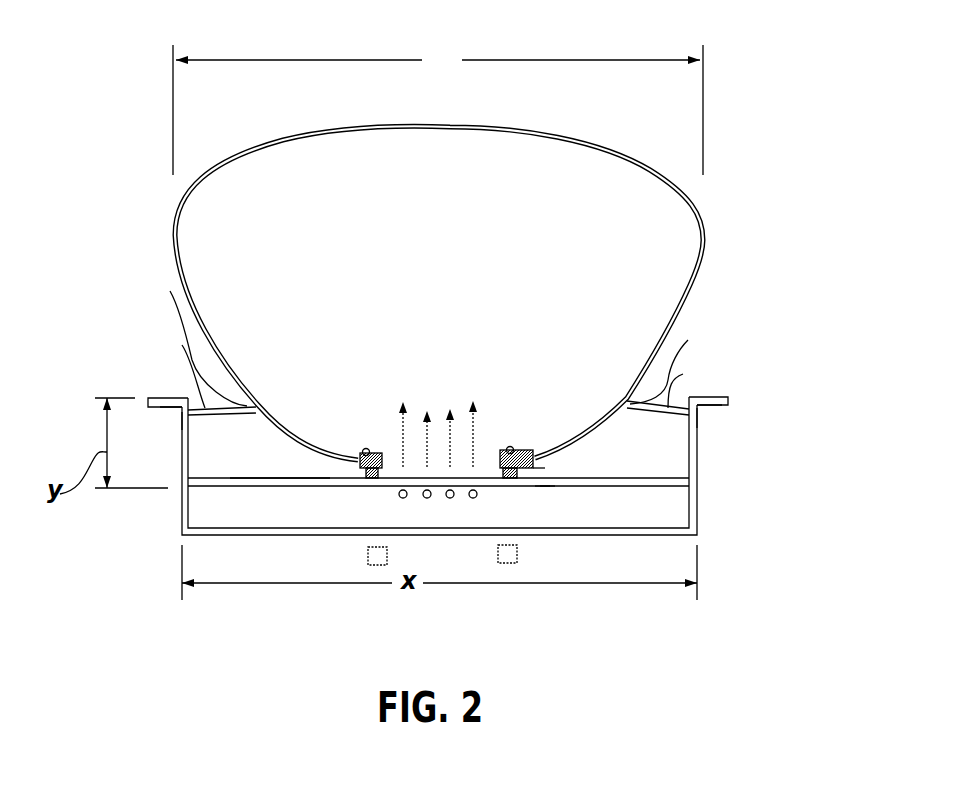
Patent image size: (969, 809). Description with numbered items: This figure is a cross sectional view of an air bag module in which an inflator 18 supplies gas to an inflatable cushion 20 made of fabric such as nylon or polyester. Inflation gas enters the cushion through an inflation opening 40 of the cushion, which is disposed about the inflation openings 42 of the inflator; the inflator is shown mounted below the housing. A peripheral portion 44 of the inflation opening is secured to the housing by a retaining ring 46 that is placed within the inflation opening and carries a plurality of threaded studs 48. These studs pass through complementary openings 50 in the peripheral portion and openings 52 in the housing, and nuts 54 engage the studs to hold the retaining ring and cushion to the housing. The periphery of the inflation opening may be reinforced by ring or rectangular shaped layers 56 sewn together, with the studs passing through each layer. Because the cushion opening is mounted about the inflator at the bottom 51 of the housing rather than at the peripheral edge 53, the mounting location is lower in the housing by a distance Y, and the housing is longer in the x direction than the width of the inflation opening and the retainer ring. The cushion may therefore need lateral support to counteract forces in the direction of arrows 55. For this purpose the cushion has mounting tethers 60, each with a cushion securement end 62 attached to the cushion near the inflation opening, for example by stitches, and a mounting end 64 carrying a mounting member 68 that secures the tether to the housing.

The inflator 18 is at (205, 508).
The inflatable cushion 20 is at (176, 222).
The inflation opening 40 is at (498, 478).
The inflation openings 42 is at (448, 498).
The peripheral portion 44 is at (378, 478).
The retaining ring 46 is at (510, 450).
The threaded studs 48 is at (547, 487).
The openings 50 is at (533, 468).
The bottom 51 is at (270, 478).
The openings 52 is at (540, 487).
The peripheral edge 53 is at (170, 398).
The nuts 54 is at (505, 563).
The arrows 55 is at (438, 108).
The layers 56 is at (355, 452).
The mounting tethers 60 is at (182, 345).
The cushion securement end 62 is at (170, 291).
The mounting end 64 is at (176, 420).
The mounting member 68 is at (165, 420).